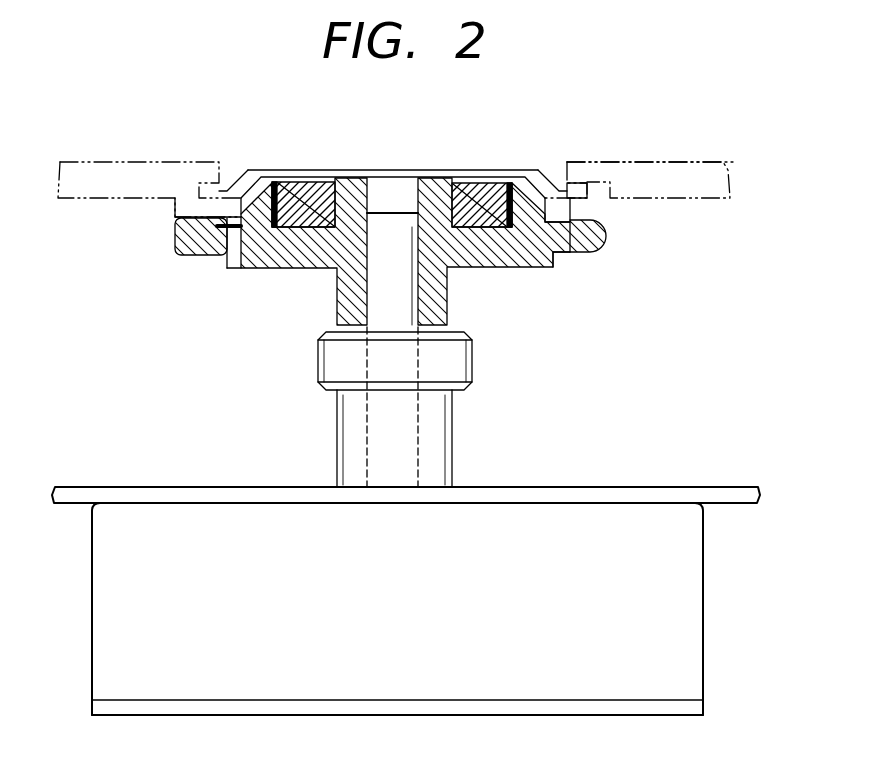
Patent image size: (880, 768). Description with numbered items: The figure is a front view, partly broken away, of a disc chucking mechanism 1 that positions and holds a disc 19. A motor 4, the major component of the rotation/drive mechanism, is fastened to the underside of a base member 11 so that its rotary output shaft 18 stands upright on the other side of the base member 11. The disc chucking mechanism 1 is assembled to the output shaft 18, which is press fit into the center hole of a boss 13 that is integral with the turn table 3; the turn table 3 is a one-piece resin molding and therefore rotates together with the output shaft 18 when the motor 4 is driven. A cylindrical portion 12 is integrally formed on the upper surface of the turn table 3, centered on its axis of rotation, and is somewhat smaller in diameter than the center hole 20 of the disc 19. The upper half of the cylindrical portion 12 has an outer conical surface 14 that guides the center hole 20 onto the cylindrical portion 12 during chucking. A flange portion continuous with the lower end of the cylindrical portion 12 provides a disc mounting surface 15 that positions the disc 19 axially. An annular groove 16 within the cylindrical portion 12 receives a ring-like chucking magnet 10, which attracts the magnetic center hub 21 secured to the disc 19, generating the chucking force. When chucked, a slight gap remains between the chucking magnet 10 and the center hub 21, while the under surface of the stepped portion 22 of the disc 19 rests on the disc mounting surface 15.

The disc chucking mechanism 1 is at (614, 185).
The turn table 3 is at (579, 253).
The motor 4 is at (697, 590).
The chucking magnet 10 is at (297, 190).
The base member 11 is at (723, 491).
The cylindrical portion 12 is at (569, 186).
The boss 13 is at (340, 304).
The conical surface 14 is at (537, 181).
The disc mounting surface 15 is at (604, 212).
The annular groove 16 is at (508, 202).
The output shaft 18 is at (408, 297).
The disc 19 is at (704, 166).
The center hole 20 is at (238, 207).
The center hub 21 is at (372, 168).
The stepped portion 22 is at (173, 207).